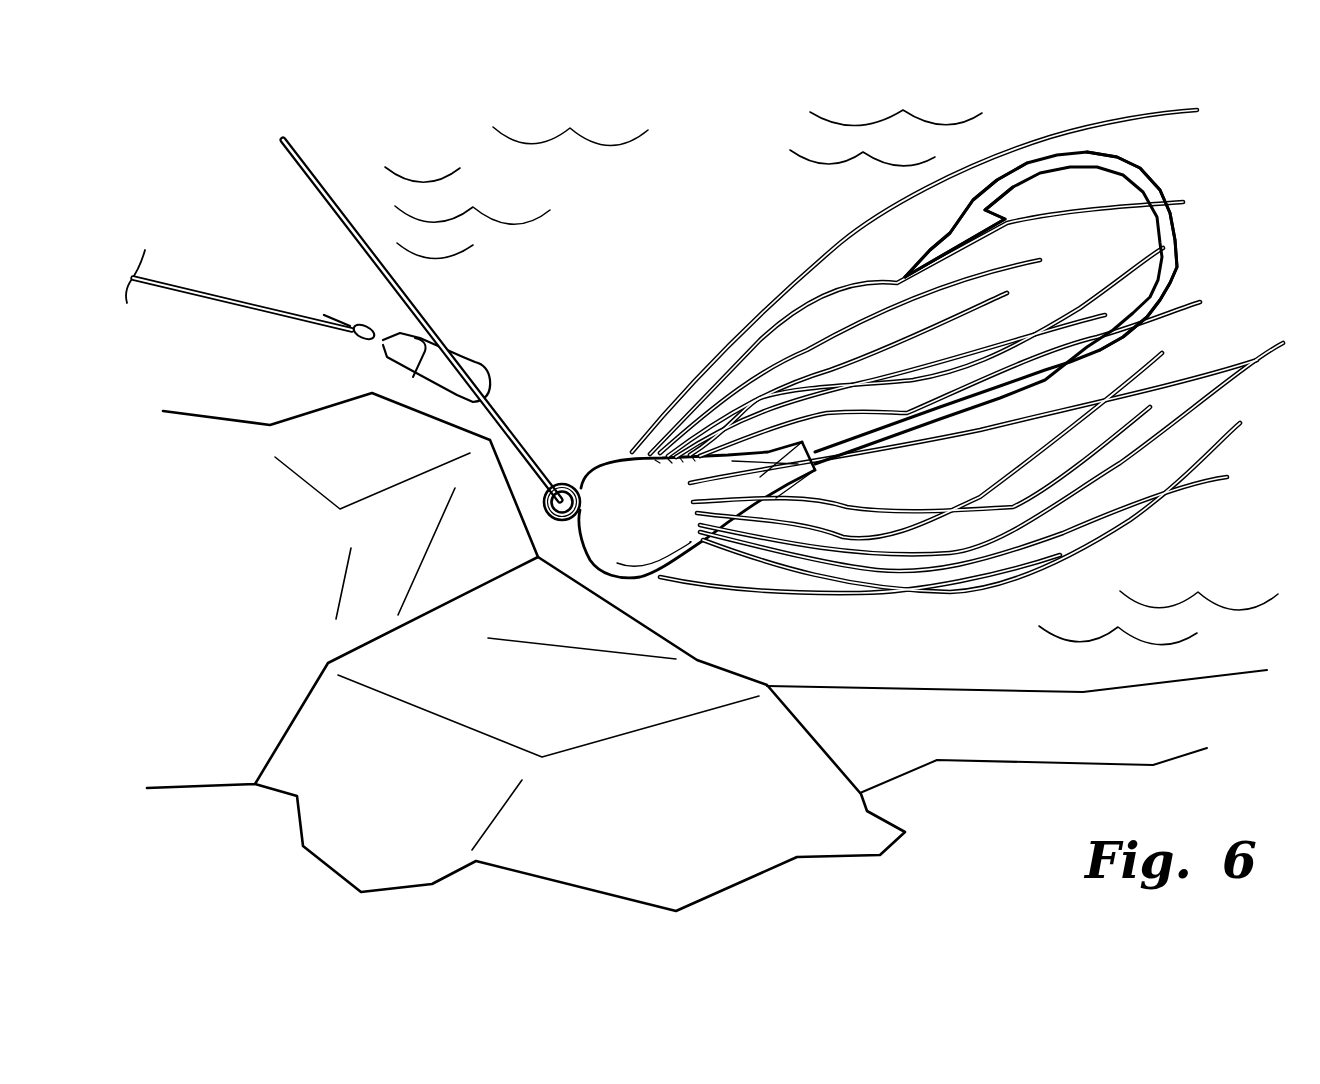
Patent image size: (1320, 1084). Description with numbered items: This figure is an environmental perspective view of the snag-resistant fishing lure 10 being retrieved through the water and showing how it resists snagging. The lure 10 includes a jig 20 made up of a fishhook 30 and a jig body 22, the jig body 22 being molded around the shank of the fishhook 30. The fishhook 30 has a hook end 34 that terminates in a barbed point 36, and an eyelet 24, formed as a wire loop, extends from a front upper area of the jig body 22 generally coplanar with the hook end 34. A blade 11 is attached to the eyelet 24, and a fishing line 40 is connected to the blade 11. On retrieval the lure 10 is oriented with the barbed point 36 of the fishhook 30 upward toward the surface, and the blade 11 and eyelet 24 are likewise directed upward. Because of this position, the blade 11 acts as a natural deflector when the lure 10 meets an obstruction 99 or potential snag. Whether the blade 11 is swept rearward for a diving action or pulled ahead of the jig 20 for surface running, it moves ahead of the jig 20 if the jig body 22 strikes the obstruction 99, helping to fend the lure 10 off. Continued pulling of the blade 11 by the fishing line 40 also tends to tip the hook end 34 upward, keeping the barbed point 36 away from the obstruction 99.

The snag-resistant fishing lure 10 is at (890, 365).
The blade 11 is at (312, 173).
The jig 20 is at (737, 490).
The jig body 22 is at (667, 572).
The eyelet 24 is at (562, 522).
The fishhook 30 is at (1172, 283).
The hook end 34 is at (1172, 223).
The barbed point 36 is at (945, 231).
The fishing line 40 is at (238, 302).
The obstruction 99 is at (497, 537).